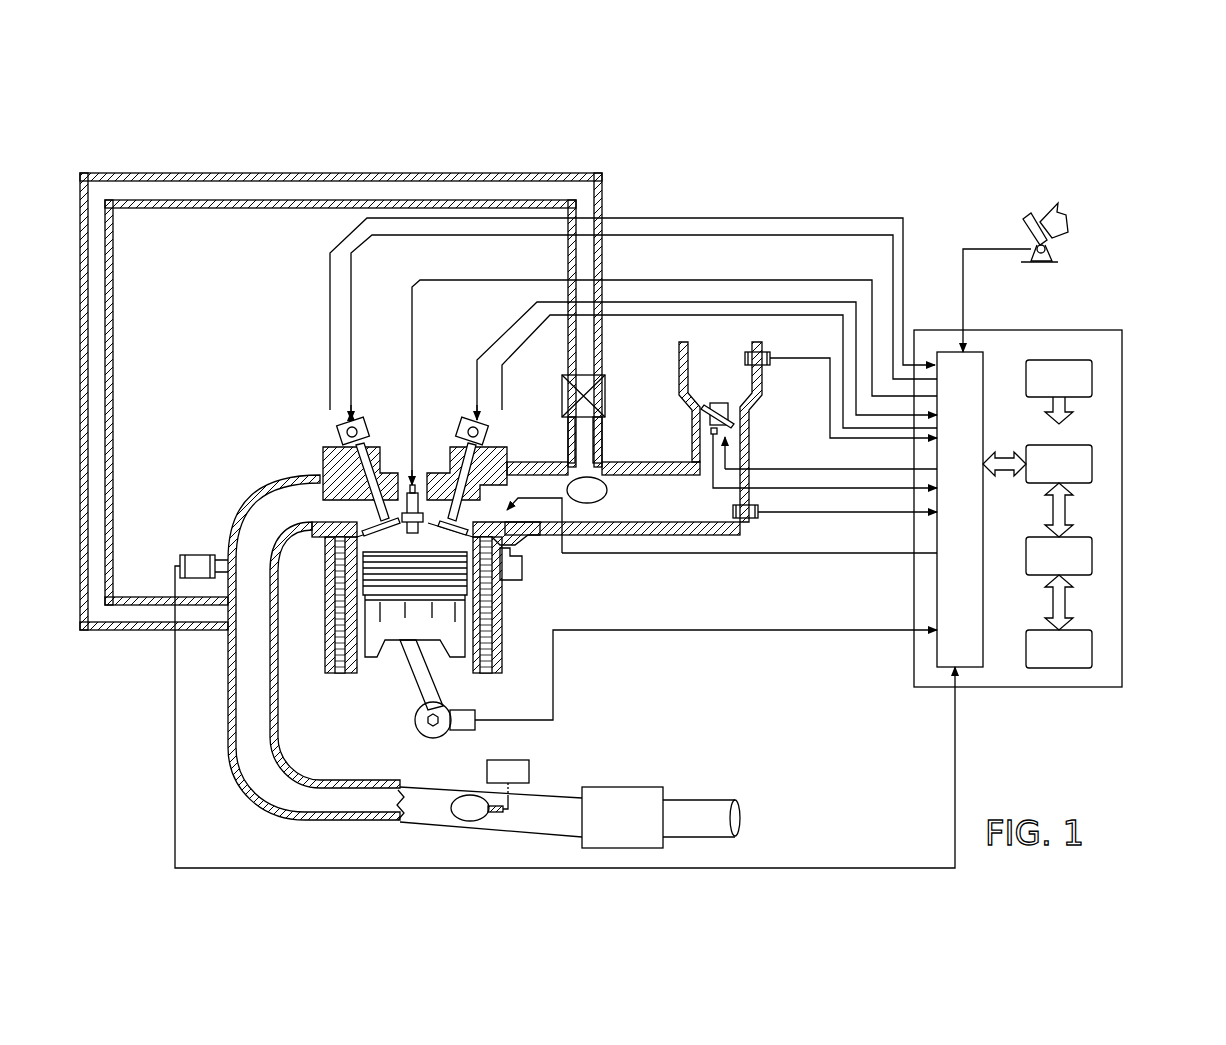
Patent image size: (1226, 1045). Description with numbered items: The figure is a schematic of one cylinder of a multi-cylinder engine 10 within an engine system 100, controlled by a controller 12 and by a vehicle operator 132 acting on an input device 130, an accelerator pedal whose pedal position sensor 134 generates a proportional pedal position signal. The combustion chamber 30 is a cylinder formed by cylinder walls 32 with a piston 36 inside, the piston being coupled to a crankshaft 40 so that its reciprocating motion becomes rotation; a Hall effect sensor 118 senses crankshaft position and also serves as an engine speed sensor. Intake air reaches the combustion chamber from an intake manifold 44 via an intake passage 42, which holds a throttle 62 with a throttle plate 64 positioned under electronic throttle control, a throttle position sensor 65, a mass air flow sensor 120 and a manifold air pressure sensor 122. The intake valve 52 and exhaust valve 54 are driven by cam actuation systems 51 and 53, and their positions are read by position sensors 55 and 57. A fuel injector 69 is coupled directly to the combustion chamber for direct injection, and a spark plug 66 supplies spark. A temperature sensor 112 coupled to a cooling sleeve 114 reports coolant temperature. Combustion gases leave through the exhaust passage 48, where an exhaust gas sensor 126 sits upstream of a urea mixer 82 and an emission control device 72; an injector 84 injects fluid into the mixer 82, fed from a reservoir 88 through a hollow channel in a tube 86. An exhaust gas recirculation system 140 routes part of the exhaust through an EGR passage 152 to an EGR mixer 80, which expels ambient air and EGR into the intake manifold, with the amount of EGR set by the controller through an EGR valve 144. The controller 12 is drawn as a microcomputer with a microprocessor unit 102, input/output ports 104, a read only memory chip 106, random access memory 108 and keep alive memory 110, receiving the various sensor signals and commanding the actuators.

The engine 10 is at (265, 405).
The controller 12 is at (1059, 496).
The combustion chamber 30 is at (340, 630).
The cylinder walls 32 is at (362, 680).
The piston 36 is at (400, 660).
The crankshaft 40 is at (420, 735).
The intake passage 42 is at (720, 432).
The intake manifold 44 is at (622, 498).
The exhaust passage 48 is at (314, 647).
The cam actuation system 51 is at (458, 410).
The intake valve 52 is at (687, 498).
The cam actuation system 53 is at (355, 410).
The exhaust valve 54 is at (360, 500).
The position sensor 55 is at (485, 430).
The position sensor 57 is at (340, 428).
The throttle 62 is at (730, 420).
The throttle plate 64 is at (704, 410).
The throttle position sensor 65 is at (710, 432).
The spark plug 66 is at (415, 485).
The fuel injector 69 is at (495, 532).
The emission control device 72 is at (661, 817).
The EGR mixer 80 is at (587, 490).
The urea mixer 82 is at (470, 808).
The injector 84 is at (505, 812).
The tube 86 is at (540, 797).
The reservoir 88 is at (508, 777).
The engine system 100 is at (1152, 150).
The microprocessor unit 102 is at (1092, 462).
The input/output ports 104 is at (990, 355).
The read only memory chip 106 is at (1092, 375).
The random access memory 108 is at (1092, 555).
The keep alive memory 110 is at (1092, 648).
The temperature sensor 112 is at (522, 566).
The cooling sleeve 114 is at (487, 630).
The Hall effect sensor 118 is at (465, 730).
The mass air flow sensor 120 is at (765, 352).
The manifold air pressure sensor 122 is at (752, 518).
The exhaust gas sensor 126 is at (180, 562).
The input device 130 is at (1022, 226).
The vehicle operator 132 is at (1066, 217).
The pedal position sensor 134 is at (1050, 250).
The exhaust gas recirculation system 140 is at (476, 160).
The EGR valve 144 is at (598, 405).
The EGR passage 152 is at (330, 175).